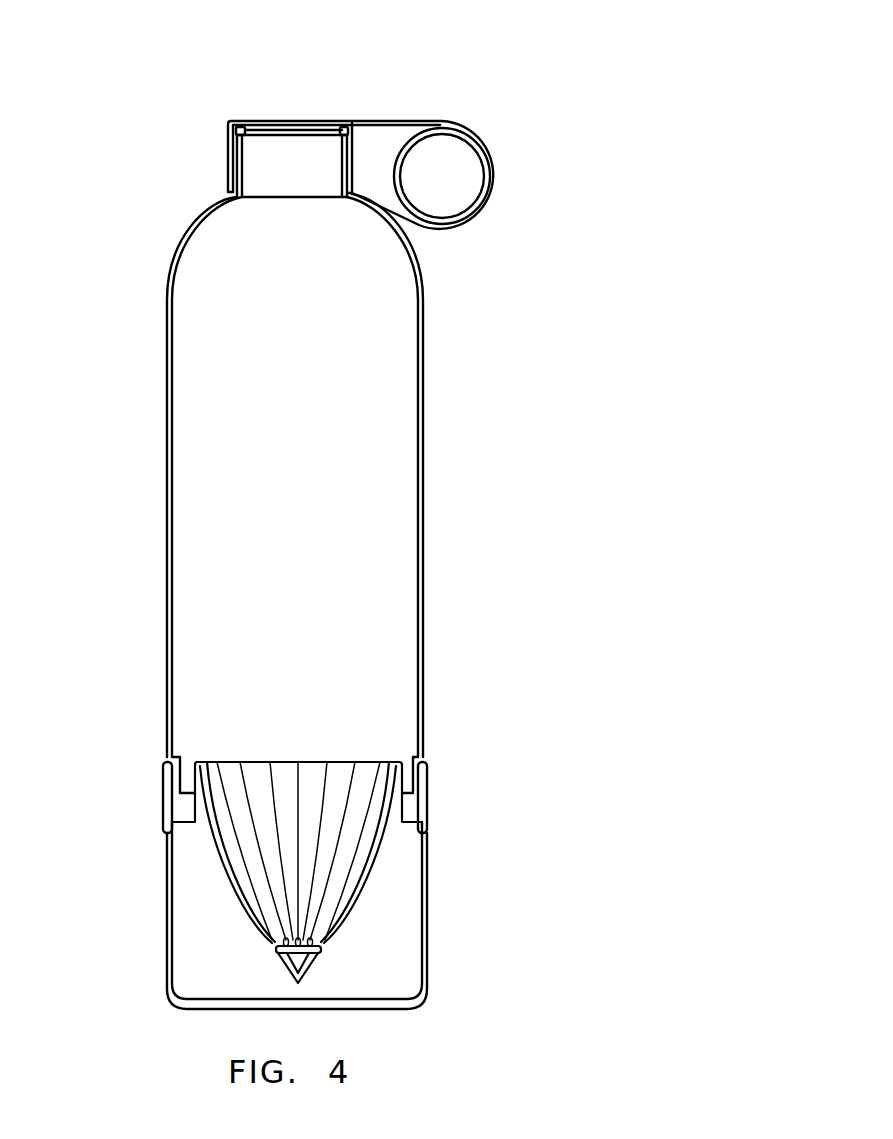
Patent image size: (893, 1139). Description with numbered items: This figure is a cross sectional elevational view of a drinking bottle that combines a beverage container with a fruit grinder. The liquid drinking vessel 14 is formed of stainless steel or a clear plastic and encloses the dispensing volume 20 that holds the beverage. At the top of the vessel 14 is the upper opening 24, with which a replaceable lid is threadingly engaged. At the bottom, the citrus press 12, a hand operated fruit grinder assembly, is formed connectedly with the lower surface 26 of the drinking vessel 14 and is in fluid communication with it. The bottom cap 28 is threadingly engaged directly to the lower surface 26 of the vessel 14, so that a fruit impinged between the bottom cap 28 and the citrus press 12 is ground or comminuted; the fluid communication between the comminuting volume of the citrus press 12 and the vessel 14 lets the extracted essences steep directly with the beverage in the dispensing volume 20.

The citrus press 12 is at (205, 762).
The liquid drinking vessel 14 is at (425, 585).
The dispensing volume 20 is at (267, 515).
The upper opening 24 is at (300, 158).
The lower surface 26 is at (425, 752).
The bottom cap 28 is at (430, 890).